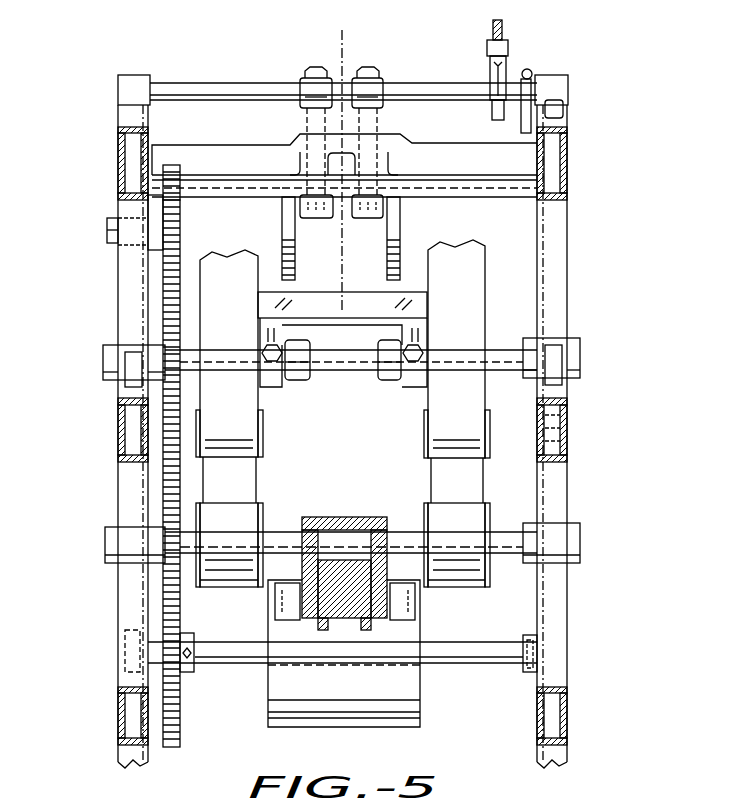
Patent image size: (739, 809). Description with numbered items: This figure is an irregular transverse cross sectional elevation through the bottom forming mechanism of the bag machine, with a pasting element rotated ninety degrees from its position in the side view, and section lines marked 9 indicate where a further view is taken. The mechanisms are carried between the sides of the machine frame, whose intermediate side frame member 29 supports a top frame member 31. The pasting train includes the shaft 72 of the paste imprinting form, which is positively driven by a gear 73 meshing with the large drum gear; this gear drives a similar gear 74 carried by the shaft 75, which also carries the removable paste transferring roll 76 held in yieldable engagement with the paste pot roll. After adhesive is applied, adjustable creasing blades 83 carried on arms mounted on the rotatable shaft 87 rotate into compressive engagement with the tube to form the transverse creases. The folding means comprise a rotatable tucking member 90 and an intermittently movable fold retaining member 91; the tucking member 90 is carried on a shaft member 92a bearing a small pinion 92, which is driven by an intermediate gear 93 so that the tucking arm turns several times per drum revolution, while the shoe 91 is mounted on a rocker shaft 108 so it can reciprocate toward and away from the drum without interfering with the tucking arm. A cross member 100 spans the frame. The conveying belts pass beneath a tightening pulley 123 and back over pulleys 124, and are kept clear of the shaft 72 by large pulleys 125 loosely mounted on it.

The section line 9- 9 is at (332, 37).
The intermediate side frame member 29 is at (557, 600).
The top frame member 31 is at (125, 287).
The shaft 72 is at (296, 516).
The gear 73 is at (163, 486).
The gear 74 is at (172, 688).
The shaft 75 is at (470, 662).
The paste transferring roll 76 is at (395, 724).
The creasing blade 83 is at (300, 302).
The rotatable shaft 87 is at (325, 367).
The tucking member 90 is at (390, 239).
The fold retaining member 91 is at (317, 215).
The pinion 92 is at (182, 205).
The shaft member 92a is at (262, 192).
The intermediate gear 93 is at (163, 240).
The cross member 100 is at (344, 165).
The rocker shaft 108 is at (420, 90).
The tightening pulley 123 is at (165, 320).
The pulley 124 is at (438, 442).
The large pulley 125 is at (452, 513).